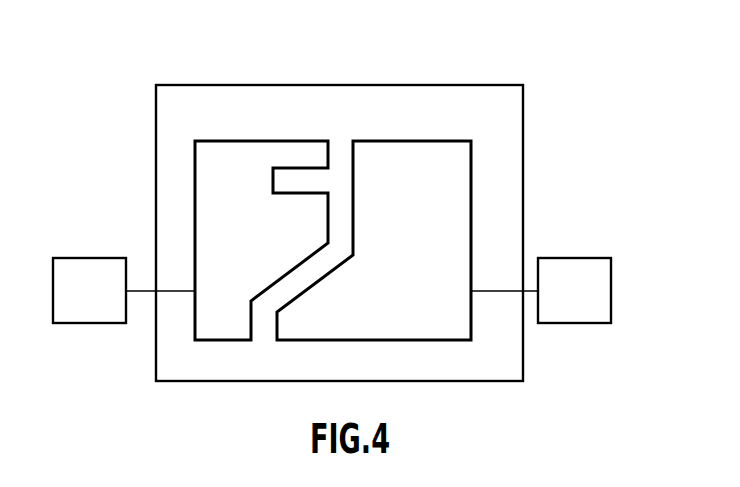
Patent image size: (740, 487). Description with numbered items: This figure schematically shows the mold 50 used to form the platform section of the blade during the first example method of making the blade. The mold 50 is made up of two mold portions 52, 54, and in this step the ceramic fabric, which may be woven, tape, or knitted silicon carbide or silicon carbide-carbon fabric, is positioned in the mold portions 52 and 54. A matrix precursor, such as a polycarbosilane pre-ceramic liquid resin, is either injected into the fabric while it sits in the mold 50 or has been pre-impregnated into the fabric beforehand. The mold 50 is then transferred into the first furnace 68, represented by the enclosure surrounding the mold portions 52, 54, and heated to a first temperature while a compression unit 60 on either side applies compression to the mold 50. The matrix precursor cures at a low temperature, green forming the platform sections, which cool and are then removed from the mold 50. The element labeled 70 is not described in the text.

The mold 50 is at (605, 39).
The mold portion 52 is at (226, 168).
The mold portion 54 is at (446, 161).
The compression unit 60 is at (332, 290).
The first furnace 68 is at (477, 84).
The gap 70 is at (322, 262).